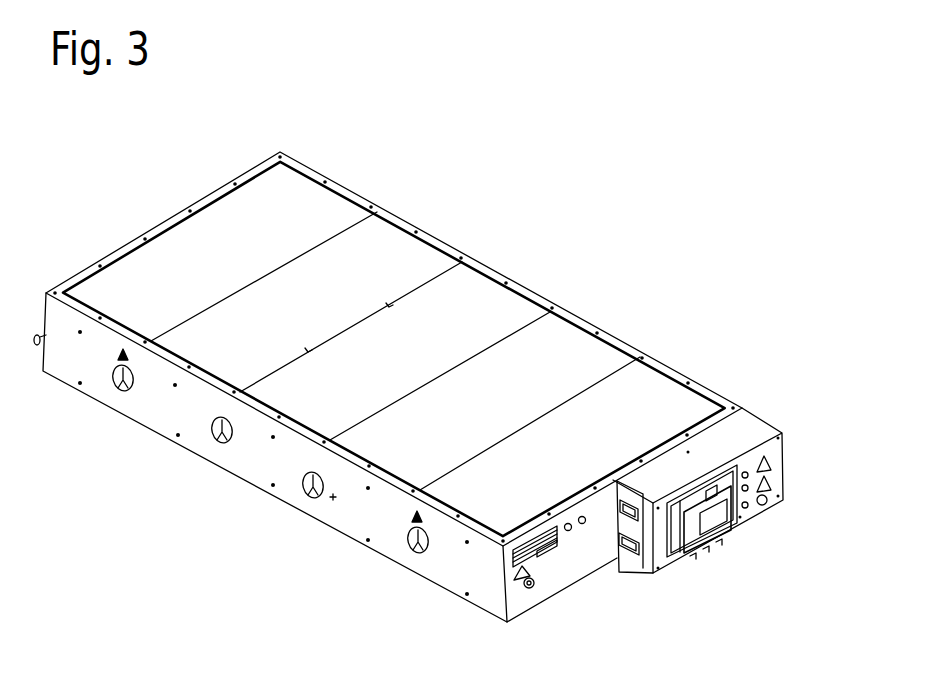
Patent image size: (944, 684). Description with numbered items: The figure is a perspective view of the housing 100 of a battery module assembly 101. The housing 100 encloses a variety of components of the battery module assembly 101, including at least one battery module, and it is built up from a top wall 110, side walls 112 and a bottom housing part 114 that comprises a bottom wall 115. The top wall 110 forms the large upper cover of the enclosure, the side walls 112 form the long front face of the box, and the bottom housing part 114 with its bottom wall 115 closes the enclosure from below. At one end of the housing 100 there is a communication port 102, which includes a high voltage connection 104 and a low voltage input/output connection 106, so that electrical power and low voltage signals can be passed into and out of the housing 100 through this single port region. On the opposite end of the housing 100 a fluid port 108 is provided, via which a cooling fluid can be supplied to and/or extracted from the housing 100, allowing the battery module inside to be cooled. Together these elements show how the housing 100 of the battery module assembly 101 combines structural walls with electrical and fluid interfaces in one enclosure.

The housing 100 is at (465, 287).
The battery module assembly 101 is at (585, 255).
The communication port 102 is at (750, 432).
The high voltage connection 104 is at (637, 522).
The low voltage input/output connection 106 is at (630, 550).
The fluid port 108 is at (37, 345).
The top wall 110 is at (338, 287).
The side walls 112 is at (357, 520).
The bottom housing part 114 is at (232, 452).
The bottom wall 115 is at (300, 507).